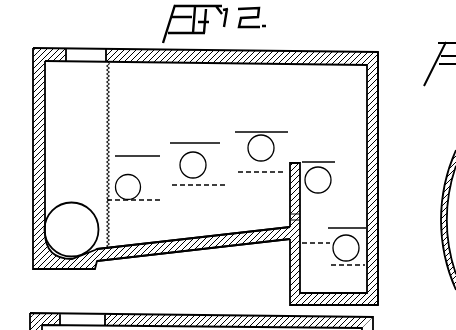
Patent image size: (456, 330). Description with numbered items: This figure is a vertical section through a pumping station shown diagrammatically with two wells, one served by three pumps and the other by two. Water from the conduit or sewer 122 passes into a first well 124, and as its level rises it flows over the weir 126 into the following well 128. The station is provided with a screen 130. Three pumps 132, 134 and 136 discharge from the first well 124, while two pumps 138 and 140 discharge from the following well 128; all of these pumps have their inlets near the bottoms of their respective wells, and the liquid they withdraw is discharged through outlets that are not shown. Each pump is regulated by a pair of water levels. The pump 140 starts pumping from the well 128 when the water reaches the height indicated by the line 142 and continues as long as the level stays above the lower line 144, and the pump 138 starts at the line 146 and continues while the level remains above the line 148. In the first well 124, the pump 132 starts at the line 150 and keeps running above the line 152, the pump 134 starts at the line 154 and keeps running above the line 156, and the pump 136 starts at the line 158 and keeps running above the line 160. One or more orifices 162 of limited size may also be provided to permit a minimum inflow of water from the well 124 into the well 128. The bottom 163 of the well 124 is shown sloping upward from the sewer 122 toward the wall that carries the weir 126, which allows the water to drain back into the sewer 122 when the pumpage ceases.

The conduit or sewer 122 is at (71, 240).
The first well 124 is at (183, 226).
The weir 126 is at (300, 161).
The following well 128 is at (315, 268).
The screen 130 is at (112, 111).
The pump 132 is at (130, 174).
The pump 134 is at (196, 152).
The pump 136 is at (261, 132).
The pump 138 is at (331, 184).
The pump 140 is at (359, 250).
The line 142 is at (336, 228).
The line 144 is at (351, 266).
The line 146 is at (331, 161).
The line 148 is at (312, 245).
The line 150 is at (140, 156).
The line 152 is at (138, 200).
The line 154 is at (173, 143).
The line 156 is at (193, 185).
The line 158 is at (281, 129).
The line 160 is at (253, 172).
The orifice 162 is at (295, 218).
The bottom 163 is at (222, 241).